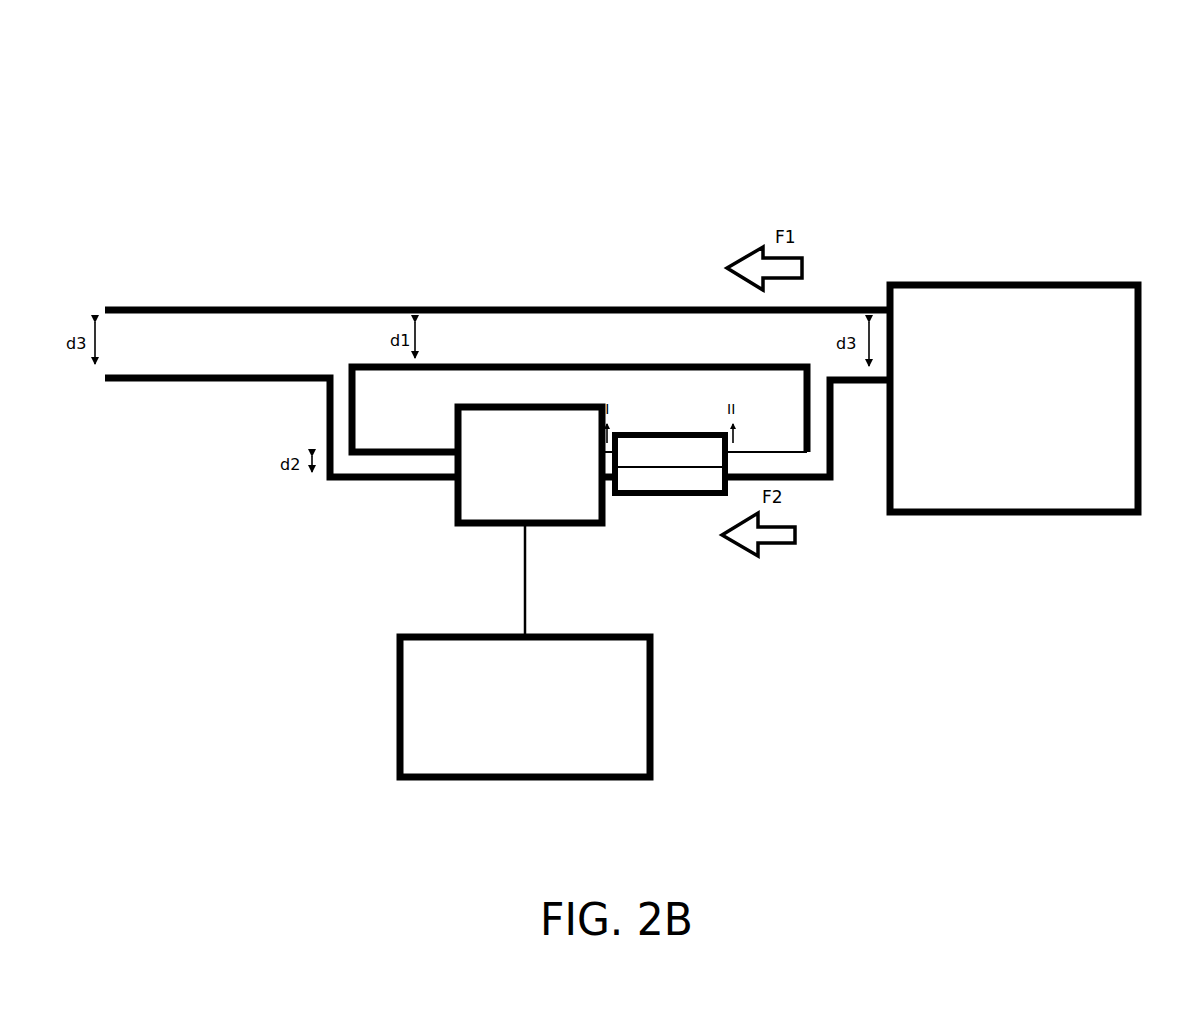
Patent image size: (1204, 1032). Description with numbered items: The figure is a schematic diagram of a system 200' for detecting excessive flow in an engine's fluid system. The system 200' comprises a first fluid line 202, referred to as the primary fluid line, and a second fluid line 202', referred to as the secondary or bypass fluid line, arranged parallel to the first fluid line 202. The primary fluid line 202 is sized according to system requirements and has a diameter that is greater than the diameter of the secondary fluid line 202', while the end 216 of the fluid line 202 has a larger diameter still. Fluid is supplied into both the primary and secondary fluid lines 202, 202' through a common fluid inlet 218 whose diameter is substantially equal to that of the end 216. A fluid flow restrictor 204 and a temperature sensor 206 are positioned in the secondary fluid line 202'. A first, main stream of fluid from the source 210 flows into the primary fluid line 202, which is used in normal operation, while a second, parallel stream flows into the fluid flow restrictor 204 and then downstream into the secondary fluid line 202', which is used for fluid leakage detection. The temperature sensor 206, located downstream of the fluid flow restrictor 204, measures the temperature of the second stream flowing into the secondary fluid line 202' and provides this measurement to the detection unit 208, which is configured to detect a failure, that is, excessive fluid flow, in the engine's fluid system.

The system 200' is at (816, 47).
The first fluid line 202 is at (497, 277).
The second fluid line 202' is at (579, 448).
The fluid flow restrictor 204 is at (670, 464).
The temperature sensor 206 is at (530, 465).
The detection unit 208 is at (525, 650).
The source 210 is at (1014, 398).
The end of the fluid line 216 is at (95, 381).
The common fluid inlet 218 is at (866, 297).